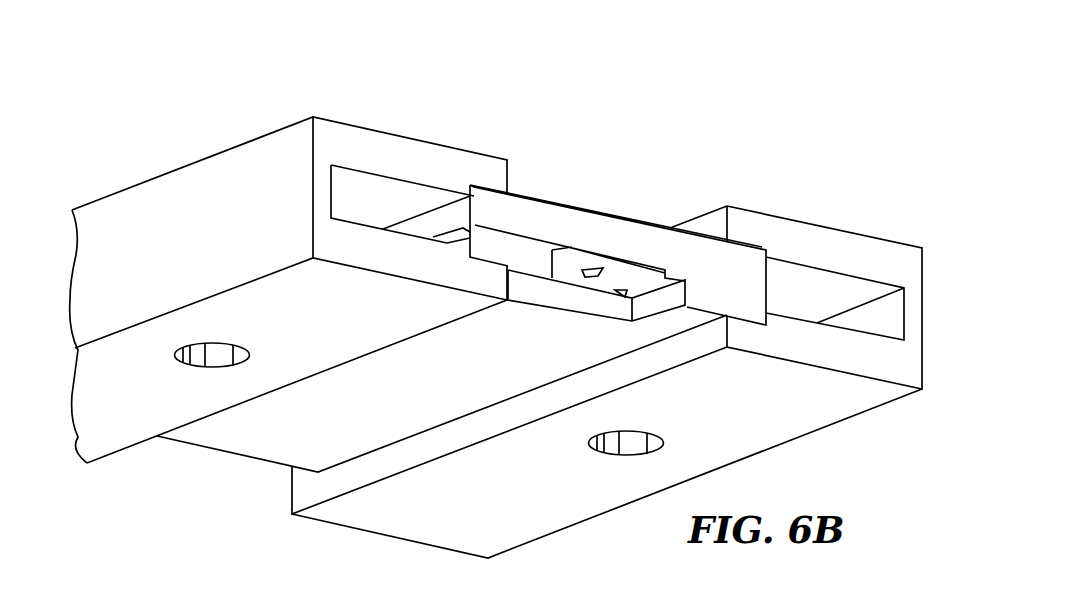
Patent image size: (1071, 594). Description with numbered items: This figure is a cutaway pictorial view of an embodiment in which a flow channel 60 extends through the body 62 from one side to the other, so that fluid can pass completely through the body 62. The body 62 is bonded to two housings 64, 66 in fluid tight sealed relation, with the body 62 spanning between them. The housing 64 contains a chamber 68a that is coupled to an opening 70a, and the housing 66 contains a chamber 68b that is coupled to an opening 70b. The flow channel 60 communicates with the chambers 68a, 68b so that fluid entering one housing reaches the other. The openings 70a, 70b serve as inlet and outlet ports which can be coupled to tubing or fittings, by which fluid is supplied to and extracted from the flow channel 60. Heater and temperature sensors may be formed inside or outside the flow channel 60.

The flow channel 60 is at (449, 237).
The body 62 is at (596, 207).
The housing 64 is at (344, 116).
The housing 66 is at (880, 240).
The chamber 68a is at (397, 202).
The chamber 68b is at (793, 290).
The opening 70a is at (216, 357).
The opening 70b is at (633, 450).